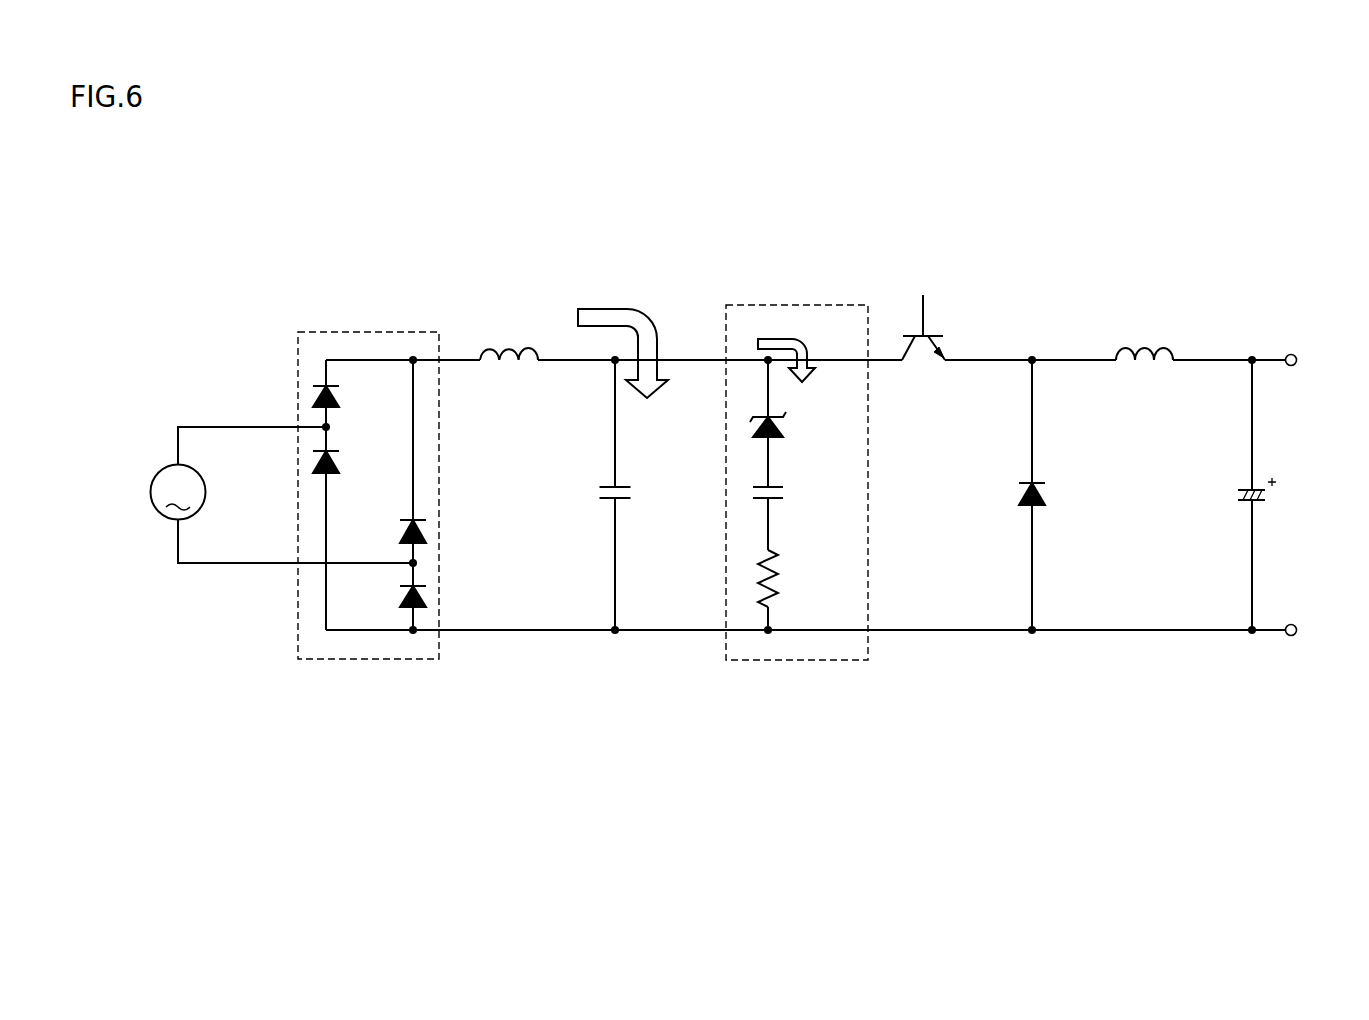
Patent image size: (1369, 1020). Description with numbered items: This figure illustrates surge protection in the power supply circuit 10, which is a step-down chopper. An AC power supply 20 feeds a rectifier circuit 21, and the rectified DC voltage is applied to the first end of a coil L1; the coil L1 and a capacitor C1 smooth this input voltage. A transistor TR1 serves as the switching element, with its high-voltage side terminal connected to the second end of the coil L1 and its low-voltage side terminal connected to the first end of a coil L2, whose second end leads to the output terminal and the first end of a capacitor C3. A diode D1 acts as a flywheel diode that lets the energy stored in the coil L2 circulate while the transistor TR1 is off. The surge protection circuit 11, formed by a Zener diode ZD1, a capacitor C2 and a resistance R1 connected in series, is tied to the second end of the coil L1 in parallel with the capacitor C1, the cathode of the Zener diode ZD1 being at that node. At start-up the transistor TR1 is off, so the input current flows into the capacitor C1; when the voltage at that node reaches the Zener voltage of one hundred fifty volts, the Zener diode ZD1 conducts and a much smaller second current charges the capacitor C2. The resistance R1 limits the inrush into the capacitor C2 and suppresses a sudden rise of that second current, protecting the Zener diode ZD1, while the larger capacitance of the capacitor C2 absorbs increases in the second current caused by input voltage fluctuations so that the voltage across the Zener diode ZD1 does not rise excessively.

The power supply circuit 10 is at (1267, 280).
The surge protection circuit 11 is at (819, 468).
The AC power supply 20 is at (163, 465).
The rectifier circuit 21 is at (368, 332).
The coil L1 is at (512, 345).
The capacitor C1 is at (625, 485).
The Zener diode ZD1 is at (775, 412).
The capacitor C2 is at (775, 483).
The resistance R1 is at (778, 572).
The transistor TR1 is at (937, 335).
The diode D1 is at (1033, 480).
The coil L2 is at (1142, 347).
The capacitor C3 is at (1260, 500).